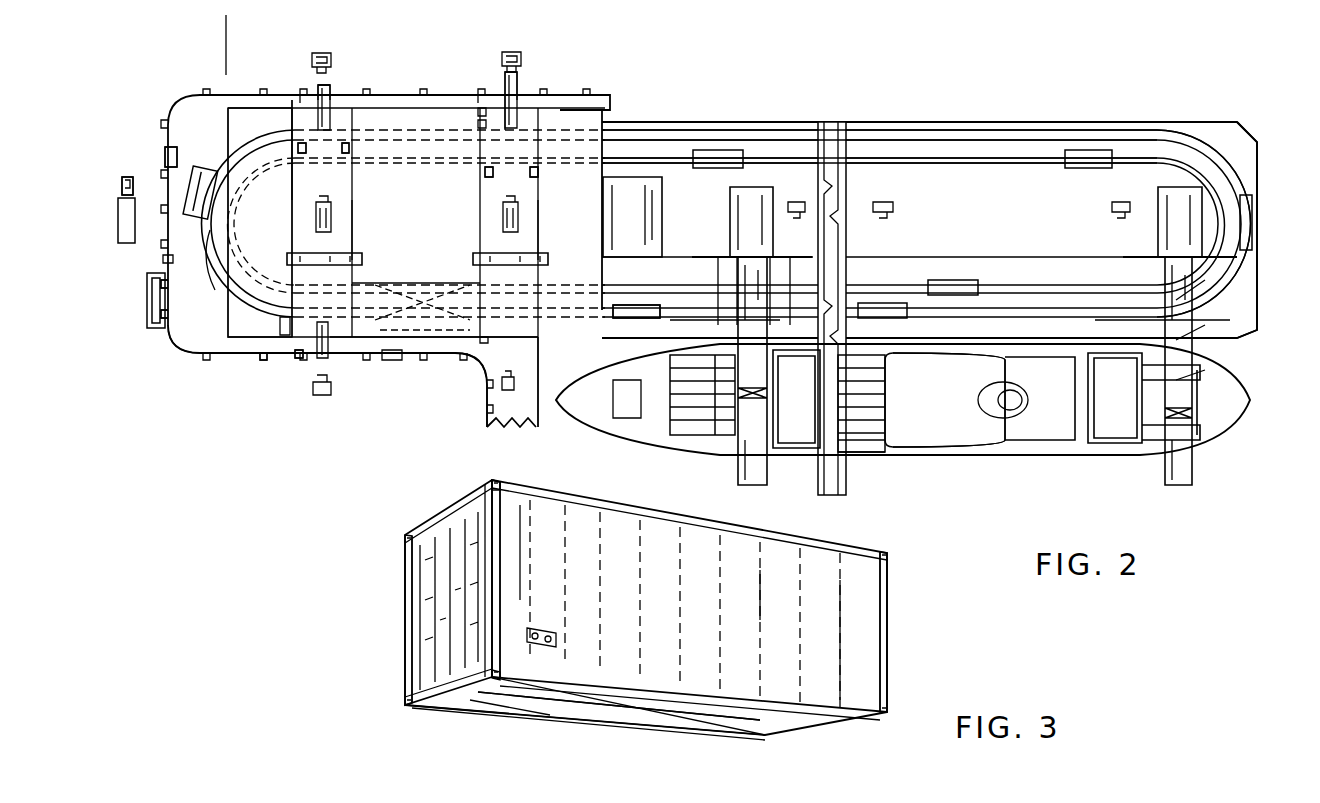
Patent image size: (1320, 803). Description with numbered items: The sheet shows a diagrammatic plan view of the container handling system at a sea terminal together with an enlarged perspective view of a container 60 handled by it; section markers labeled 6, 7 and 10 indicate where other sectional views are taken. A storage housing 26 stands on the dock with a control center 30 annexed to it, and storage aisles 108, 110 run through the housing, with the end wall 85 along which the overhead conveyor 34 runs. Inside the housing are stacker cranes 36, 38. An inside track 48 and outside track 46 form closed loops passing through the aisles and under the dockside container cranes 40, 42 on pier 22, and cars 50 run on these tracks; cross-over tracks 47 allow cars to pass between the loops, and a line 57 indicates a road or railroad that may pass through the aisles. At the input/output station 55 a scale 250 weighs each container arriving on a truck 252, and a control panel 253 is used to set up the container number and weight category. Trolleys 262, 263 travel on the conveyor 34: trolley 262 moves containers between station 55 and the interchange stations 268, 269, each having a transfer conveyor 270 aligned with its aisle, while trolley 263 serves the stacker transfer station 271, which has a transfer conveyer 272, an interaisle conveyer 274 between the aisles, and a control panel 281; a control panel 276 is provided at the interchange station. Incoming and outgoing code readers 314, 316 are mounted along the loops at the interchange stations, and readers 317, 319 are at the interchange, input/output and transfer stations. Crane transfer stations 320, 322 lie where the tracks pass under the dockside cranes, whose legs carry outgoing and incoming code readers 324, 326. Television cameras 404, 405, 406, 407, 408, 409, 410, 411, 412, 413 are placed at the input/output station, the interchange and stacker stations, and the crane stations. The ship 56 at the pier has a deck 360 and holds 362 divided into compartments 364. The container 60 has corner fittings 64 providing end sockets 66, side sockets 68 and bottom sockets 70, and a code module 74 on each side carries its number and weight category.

In FIG. 2, the section line 6 is at (592, 17).
In FIG. 2, the section line 7 is at (407, 190).
In FIG. 2, the section line 10 is at (1160, 509).
In FIG. 2, the finger pier 22 is at (1126, 122).
In FIG. 2, the storage housing 26 is at (608, 110).
In FIG. 2, the control center 30 is at (650, 177).
In FIG. 2, the conveyor 34 is at (266, 360).
In FIG. 2, the stacker crane 36 is at (362, 260).
In FIG. 2, the stacker crane 38 is at (548, 262).
In FIG. 2, the dockside container crane 40 is at (732, 220).
In FIG. 2, the dockside container crane 42 is at (1178, 187).
In FIG. 2, the outside track 46 is at (917, 140).
In FIG. 2, the cross-over tracks 47 is at (425, 305).
In FIG. 2, the inside track 48 is at (1000, 158).
In FIG. 2, the car 50 is at (650, 305).
In FIG. 2, the input/output station 55 is at (157, 264).
In FIG. 2, the ship 56 is at (875, 450).
In FIG. 2, the line 57 is at (231, 15).
In FIG. 2, the container 60 is at (1252, 210).
In FIG. 3, the container 60 is at (752, 525).
In FIG. 3, the corner fittings 64 is at (888, 710).
In FIG. 3, the end sockets 66 is at (492, 678).
In FIG. 3, the side sockets 68 is at (510, 680).
In FIG. 3, the bottom sockets 70 is at (540, 702).
In FIG. 3, the code module 74 is at (556, 635).
In FIG. 2, the end wall 85 is at (228, 130).
In FIG. 2, the aisle 108 is at (293, 130).
In FIG. 2, the aisle 110 is at (520, 145).
In FIG. 2, the scale 250 is at (147, 315).
In FIG. 2, the truck 252 is at (122, 185).
In FIG. 2, the control panel 253 is at (163, 258).
In FIG. 2, the trolley 262 is at (165, 150).
In FIG. 2, the trolley 263 is at (410, 362).
In FIG. 2, the interchange station 268 is at (318, 92).
In FIG. 2, the interchange station 269 is at (520, 130).
In FIG. 2, the transfer conveyor 270 is at (508, 75).
In FIG. 2, the stacker transfer station 271 is at (290, 365).
In FIG. 2, the transfer conveyer 272 is at (328, 358).
In FIG. 2, the interaisle conveyer 274 is at (430, 337).
In FIG. 2, the control panel 276 is at (300, 155).
In FIG. 2, the control panel 281 is at (240, 353).
In FIG. 2, the incoming container code reader 314 is at (490, 178).
In FIG. 2, the outgoing container code reader 316 is at (535, 178).
In FIG. 2, the code reader 317 is at (330, 108).
In FIG. 2, the code reader 319 is at (300, 362).
In FIG. 2, the crane transfer station 320 is at (1205, 345).
In FIG. 2, the crane transfer station 322 is at (732, 273).
In FIG. 2, the outgoing container code reader 324 is at (1130, 320).
In FIG. 2, the incoming container code reader 326 is at (1245, 300).
In FIG. 2, the deck 360 is at (1025, 447).
In FIG. 2, the hold 362 is at (850, 455).
In FIG. 2, the compartment 364 is at (870, 440).
In FIG. 2, the television camera 404 is at (225, 290).
In FIG. 2, the television camera 405 is at (331, 390).
In FIG. 2, the television camera 406 is at (316, 220).
In FIG. 2, the television camera 407 is at (518, 222).
In FIG. 2, the television camera 408 is at (503, 220).
In FIG. 2, the television camera 409 is at (331, 222).
In FIG. 2, the television camera 410 is at (332, 60).
In FIG. 2, the television camera 411 is at (521, 58).
In FIG. 2, the television camera 412 is at (1118, 202).
In FIG. 2, the television camera 413 is at (500, 410).